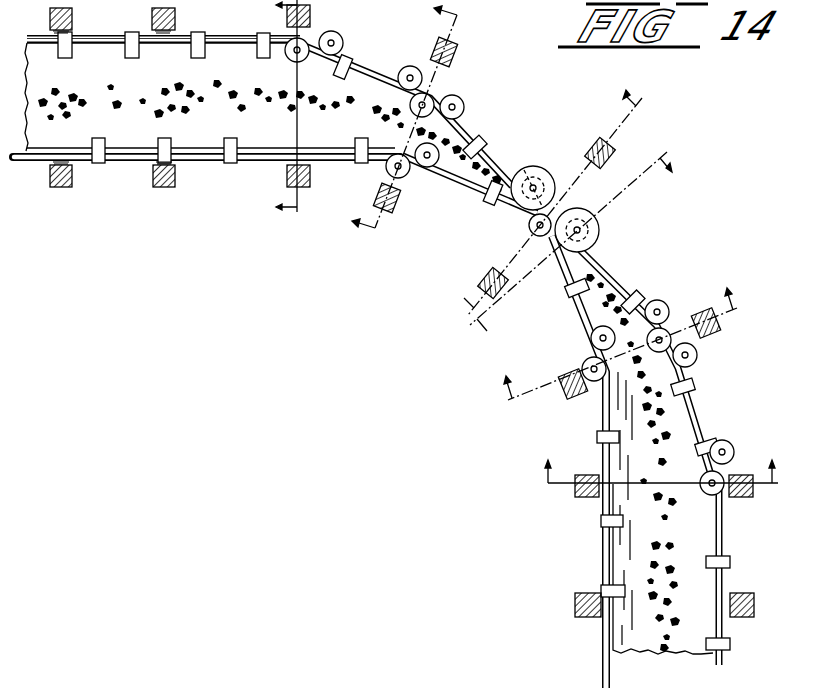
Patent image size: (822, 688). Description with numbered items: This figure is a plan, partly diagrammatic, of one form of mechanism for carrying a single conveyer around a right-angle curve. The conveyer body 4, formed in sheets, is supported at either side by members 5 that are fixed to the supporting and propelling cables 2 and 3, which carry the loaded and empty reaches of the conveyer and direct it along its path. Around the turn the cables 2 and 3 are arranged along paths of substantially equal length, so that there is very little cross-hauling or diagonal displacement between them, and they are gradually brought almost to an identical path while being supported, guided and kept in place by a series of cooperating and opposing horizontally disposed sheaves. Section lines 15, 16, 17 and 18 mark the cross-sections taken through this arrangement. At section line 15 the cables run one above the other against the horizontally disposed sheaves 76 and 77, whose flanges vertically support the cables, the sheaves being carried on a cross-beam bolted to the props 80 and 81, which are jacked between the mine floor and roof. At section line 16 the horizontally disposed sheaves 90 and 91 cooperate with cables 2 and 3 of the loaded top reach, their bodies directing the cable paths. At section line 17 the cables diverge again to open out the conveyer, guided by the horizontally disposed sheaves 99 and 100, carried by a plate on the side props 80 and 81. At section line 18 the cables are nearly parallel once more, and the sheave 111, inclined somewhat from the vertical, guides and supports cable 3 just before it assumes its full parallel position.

The supporting and propelling cable 2 is at (478, 196).
The supporting and propelling cable 3 is at (488, 157).
The conveyer body 4 is at (137, 149).
The supporting member 5 is at (128, 40).
The section line 15- 15 is at (556, 202).
The section line 16- 16 is at (574, 241).
The section line 17- 17 is at (561, 214).
The section line 18- 18 is at (531, 251).
The horizontally disposed sheave 76 is at (529, 226).
The horizontally disposed sheave 77 is at (536, 231).
The prop 80 is at (165, 188).
The prop 81 is at (177, 18).
The horizontally disposed sheave 90 is at (548, 174).
The horizontally disposed sheave 91 is at (537, 177).
The horizontally disposed sheave 99 is at (588, 362).
The horizontally disposed sheave 100 is at (664, 334).
The inclined sheave 111 is at (727, 480).